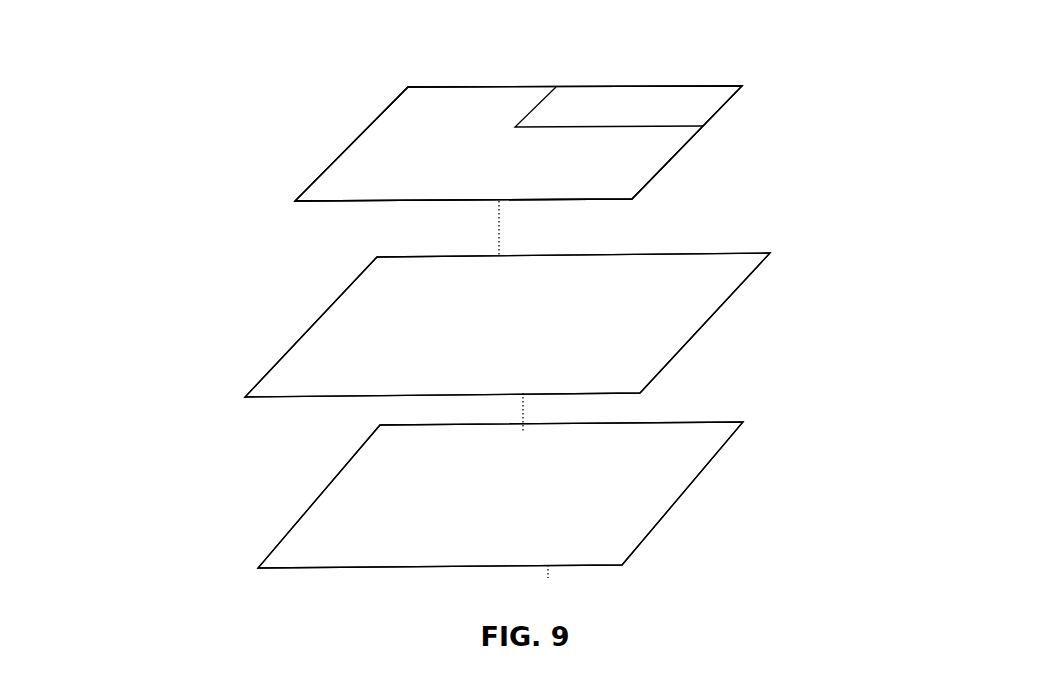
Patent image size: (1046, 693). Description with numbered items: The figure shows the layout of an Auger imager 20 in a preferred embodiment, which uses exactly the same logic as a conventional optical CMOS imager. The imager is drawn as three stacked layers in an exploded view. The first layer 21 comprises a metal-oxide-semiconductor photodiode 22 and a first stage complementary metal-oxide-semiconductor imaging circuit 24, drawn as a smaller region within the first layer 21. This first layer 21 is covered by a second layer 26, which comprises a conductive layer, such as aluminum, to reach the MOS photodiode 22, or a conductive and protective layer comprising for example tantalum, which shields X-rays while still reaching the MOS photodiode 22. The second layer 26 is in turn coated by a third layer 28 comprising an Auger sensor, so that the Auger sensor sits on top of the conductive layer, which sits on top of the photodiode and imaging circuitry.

The Auger imager 20 is at (245, 312).
The first layer 21 is at (352, 139).
The metal-oxide-semiconductor (MOS) photodiode 22 is at (702, 110).
The first stage complementary metal-oxide-semiconductor (CMOS) imaging circuit 24 is at (637, 175).
The second layer 26 is at (693, 316).
The third layer 28 is at (672, 497).